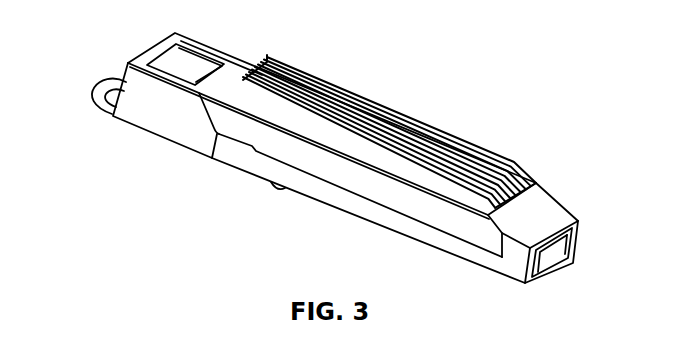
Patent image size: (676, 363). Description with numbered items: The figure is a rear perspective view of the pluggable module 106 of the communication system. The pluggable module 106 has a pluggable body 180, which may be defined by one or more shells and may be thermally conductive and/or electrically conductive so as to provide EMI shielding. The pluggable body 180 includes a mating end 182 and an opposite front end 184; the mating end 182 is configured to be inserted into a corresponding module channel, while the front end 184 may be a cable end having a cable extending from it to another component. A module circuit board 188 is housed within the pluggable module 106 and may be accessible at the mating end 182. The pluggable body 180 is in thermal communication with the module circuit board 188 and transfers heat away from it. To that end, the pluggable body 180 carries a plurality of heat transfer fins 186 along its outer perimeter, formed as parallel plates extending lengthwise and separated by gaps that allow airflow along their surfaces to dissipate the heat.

The pluggable module 106 is at (470, 82).
The pluggable body 180 is at (442, 234).
The mating end 182 is at (575, 236).
The front end 184 is at (156, 48).
The heat transfer fins 186 is at (492, 157).
The module circuit board 188 is at (548, 250).